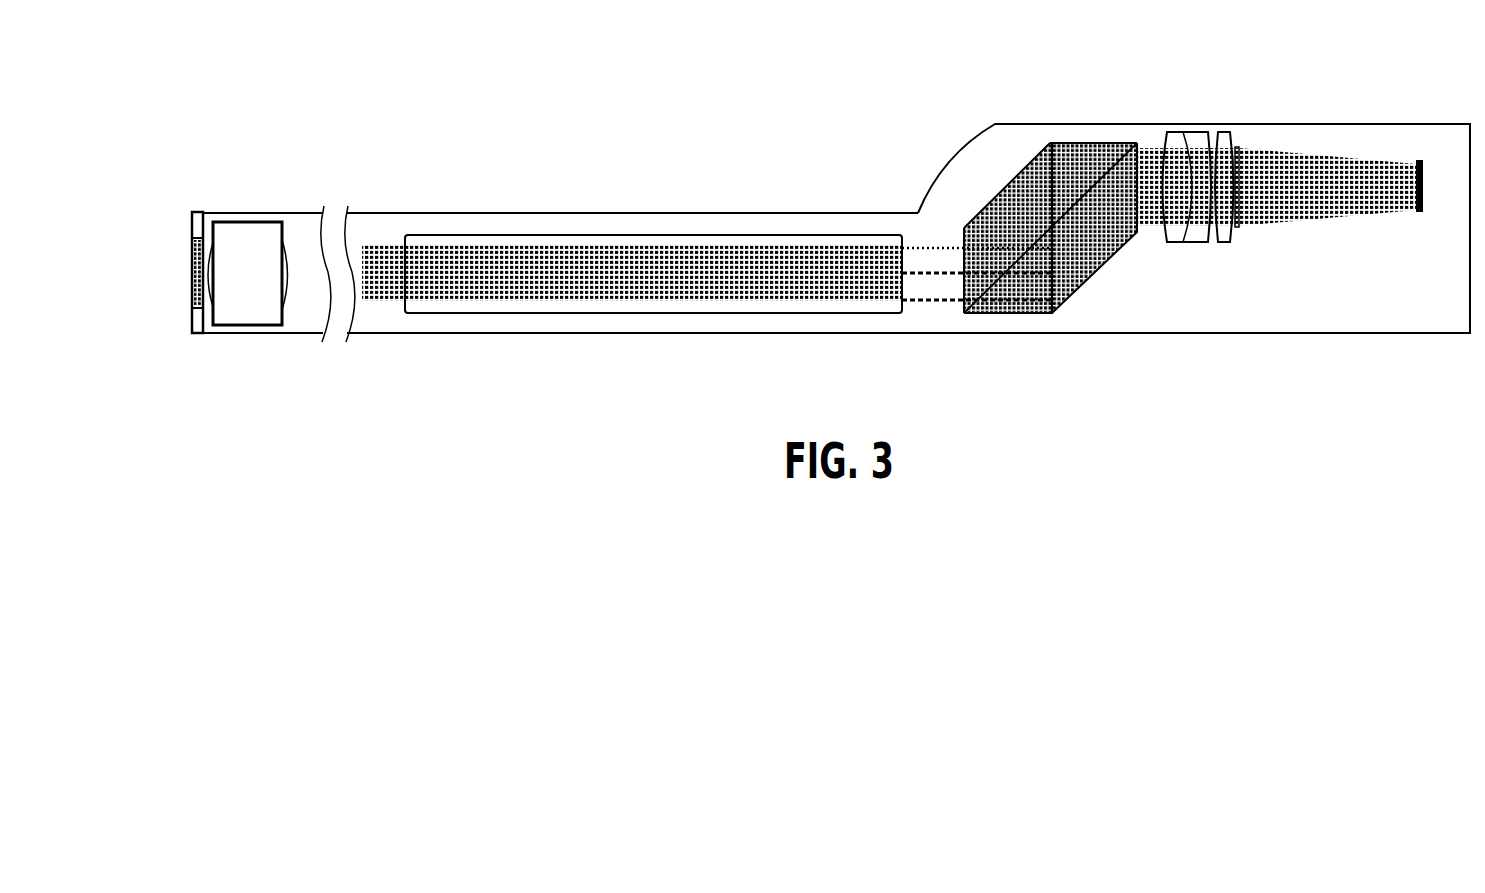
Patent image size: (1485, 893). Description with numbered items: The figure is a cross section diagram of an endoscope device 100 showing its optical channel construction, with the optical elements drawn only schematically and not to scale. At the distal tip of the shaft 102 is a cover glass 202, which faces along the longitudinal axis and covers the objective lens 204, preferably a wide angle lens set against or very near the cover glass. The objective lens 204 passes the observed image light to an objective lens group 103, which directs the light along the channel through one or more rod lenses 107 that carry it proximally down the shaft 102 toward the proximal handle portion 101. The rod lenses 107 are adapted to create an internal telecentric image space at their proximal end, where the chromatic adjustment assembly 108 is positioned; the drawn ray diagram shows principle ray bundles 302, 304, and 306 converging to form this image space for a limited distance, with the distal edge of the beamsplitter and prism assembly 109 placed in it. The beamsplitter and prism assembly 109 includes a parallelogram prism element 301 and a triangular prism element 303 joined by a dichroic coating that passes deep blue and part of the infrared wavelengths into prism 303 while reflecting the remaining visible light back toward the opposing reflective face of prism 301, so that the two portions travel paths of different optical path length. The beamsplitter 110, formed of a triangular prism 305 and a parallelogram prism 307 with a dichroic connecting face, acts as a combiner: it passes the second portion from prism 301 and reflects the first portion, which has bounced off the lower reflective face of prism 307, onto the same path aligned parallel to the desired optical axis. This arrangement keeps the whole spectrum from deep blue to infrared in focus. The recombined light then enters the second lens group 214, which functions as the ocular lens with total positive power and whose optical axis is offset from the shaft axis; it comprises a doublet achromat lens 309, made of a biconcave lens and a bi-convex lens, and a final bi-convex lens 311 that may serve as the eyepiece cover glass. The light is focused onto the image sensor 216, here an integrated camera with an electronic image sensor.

The endoscope device 100 is at (566, 69).
The proximal handle portion 101 is at (994, 123).
The shaft 102 is at (453, 212).
The objective lens group 103 is at (256, 236).
The rod lenses 107 is at (617, 234).
The chromatic adjustment assembly 108 is at (1026, 224).
The beamsplitter and prism assembly 109 is at (975, 197).
The beamsplitter 110 is at (1100, 142).
The cover glass 202 is at (151, 272).
The objective lens 204 is at (197, 274).
The second lens group 214 is at (1215, 121).
The image sensor 216 is at (1419, 152).
The parallelogram prism element 301 is at (1012, 175).
The principle ray bundle 302 is at (913, 231).
The triangular prism element 303 is at (1010, 291).
The principle ray bundle 304 is at (940, 262).
The triangular prism 305 is at (1071, 141).
The principle ray bundle 306 is at (925, 314).
The parallelogram prism 307 is at (1116, 270).
The doublet achromat lens 309 is at (1166, 134).
The final bi-convex lens 311 is at (1238, 231).